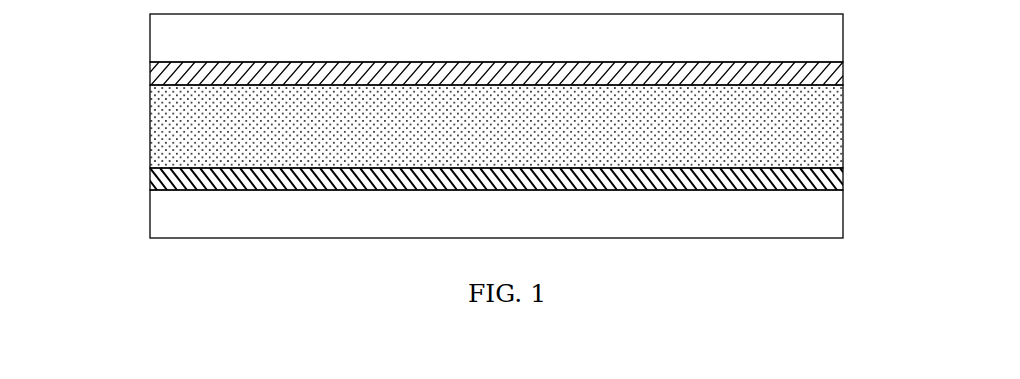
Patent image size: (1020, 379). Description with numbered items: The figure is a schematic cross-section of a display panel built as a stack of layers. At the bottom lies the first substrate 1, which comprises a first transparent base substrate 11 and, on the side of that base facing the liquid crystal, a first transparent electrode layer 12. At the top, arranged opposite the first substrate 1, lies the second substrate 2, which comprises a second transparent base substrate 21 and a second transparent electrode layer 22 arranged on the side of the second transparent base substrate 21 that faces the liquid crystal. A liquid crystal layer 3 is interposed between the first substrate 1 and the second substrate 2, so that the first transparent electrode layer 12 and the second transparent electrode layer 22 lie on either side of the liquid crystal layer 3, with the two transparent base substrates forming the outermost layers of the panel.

The first substrate 1 is at (443, 205).
The first transparent base substrate 11 is at (150, 225).
The first transparent electrode layer 12 is at (150, 172).
The second substrate 2 is at (556, 60).
The second transparent base substrate 21 is at (843, 35).
The second transparent electrode layer 22 is at (535, 84).
The liquid crystal layer 3 is at (843, 135).